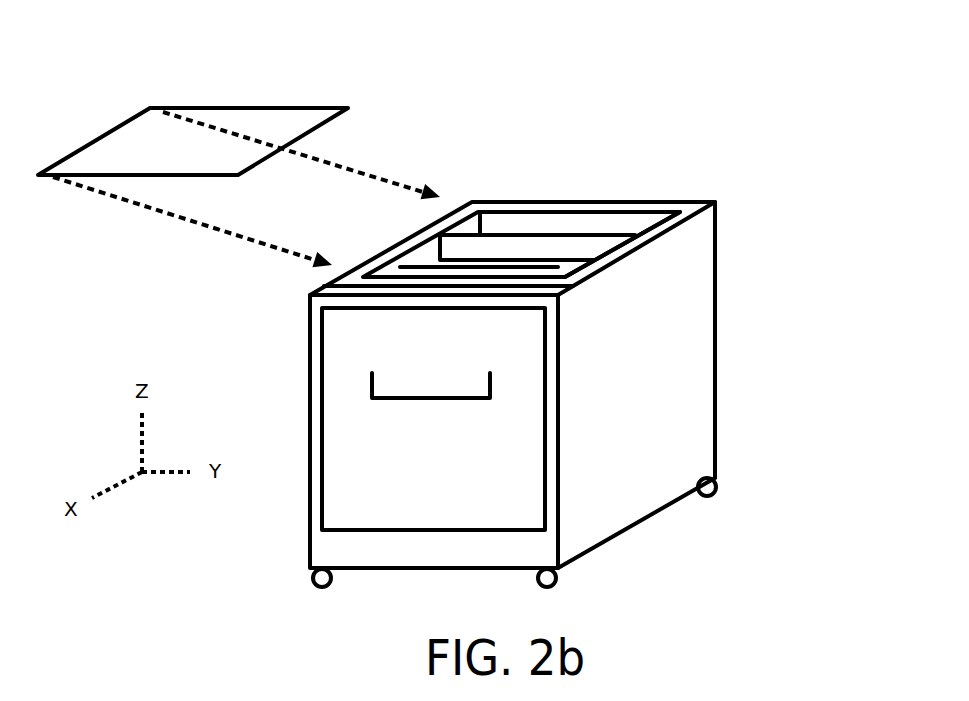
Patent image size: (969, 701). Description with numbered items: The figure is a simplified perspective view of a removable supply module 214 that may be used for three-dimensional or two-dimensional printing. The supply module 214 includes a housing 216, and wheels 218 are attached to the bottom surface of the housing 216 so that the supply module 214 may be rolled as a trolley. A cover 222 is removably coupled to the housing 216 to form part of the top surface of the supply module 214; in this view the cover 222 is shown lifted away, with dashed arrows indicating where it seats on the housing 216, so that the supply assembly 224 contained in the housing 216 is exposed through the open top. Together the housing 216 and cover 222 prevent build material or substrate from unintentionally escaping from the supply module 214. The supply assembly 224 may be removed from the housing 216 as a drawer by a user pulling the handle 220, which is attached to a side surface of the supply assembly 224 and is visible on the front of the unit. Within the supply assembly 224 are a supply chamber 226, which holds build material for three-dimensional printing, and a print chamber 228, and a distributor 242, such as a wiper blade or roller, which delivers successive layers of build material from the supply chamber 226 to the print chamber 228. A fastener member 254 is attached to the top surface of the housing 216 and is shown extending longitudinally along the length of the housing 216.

The removable supply module 214 is at (572, 150).
The housing 216 is at (310, 465).
The wheels 218 is at (312, 575).
The handle 220 is at (398, 401).
The cover 222 is at (260, 107).
The supply assembly 224 is at (557, 212).
The supply chamber 226 is at (592, 247).
The print chamber 228 is at (588, 225).
The distributor 242 is at (410, 268).
The fastener member 254 is at (350, 293).